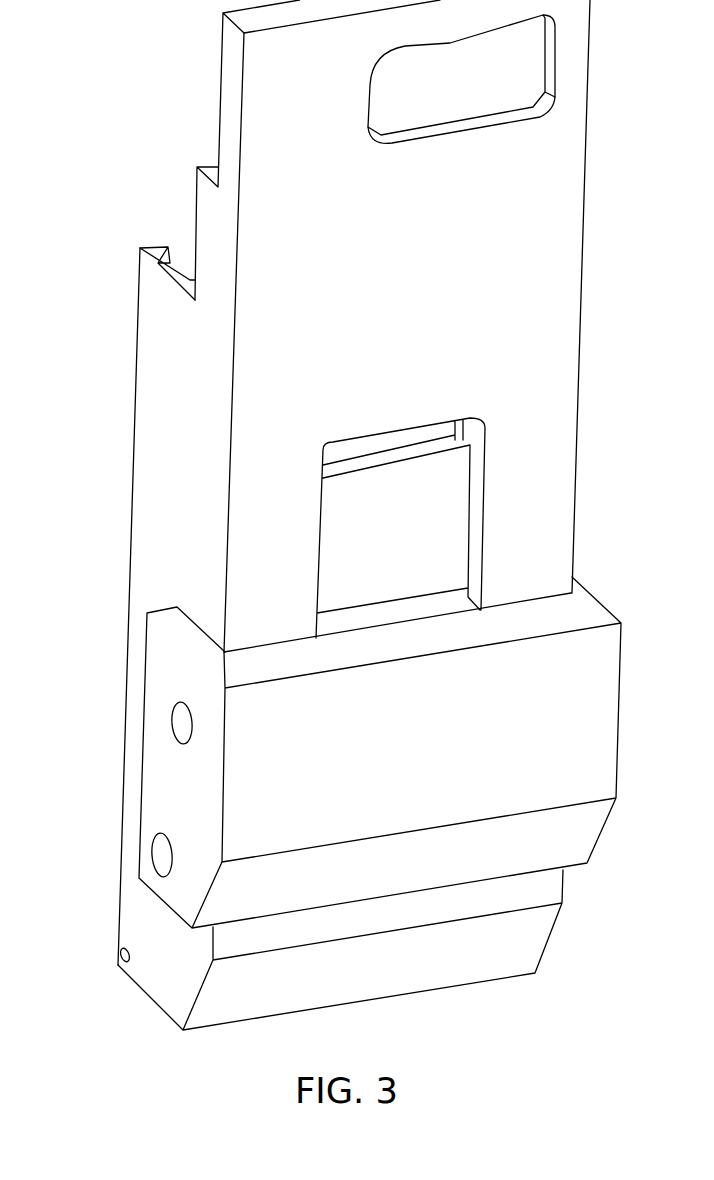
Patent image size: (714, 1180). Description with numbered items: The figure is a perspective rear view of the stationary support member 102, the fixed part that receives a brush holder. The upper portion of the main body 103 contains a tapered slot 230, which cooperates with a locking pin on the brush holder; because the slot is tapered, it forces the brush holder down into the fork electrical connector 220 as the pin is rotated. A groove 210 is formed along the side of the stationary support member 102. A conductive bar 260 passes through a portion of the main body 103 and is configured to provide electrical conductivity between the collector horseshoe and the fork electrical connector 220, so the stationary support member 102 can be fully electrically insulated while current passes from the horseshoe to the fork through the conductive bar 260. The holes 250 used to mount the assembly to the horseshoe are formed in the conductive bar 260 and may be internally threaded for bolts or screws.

The stationary support member 102 is at (160, 50).
The main body 103 is at (421, 282).
The groove 210 is at (140, 262).
The fork electrical connector 220 is at (428, 544).
The tapered slot 230 is at (452, 43).
The holes 250 is at (162, 855).
The conductive bar 260 is at (459, 753).